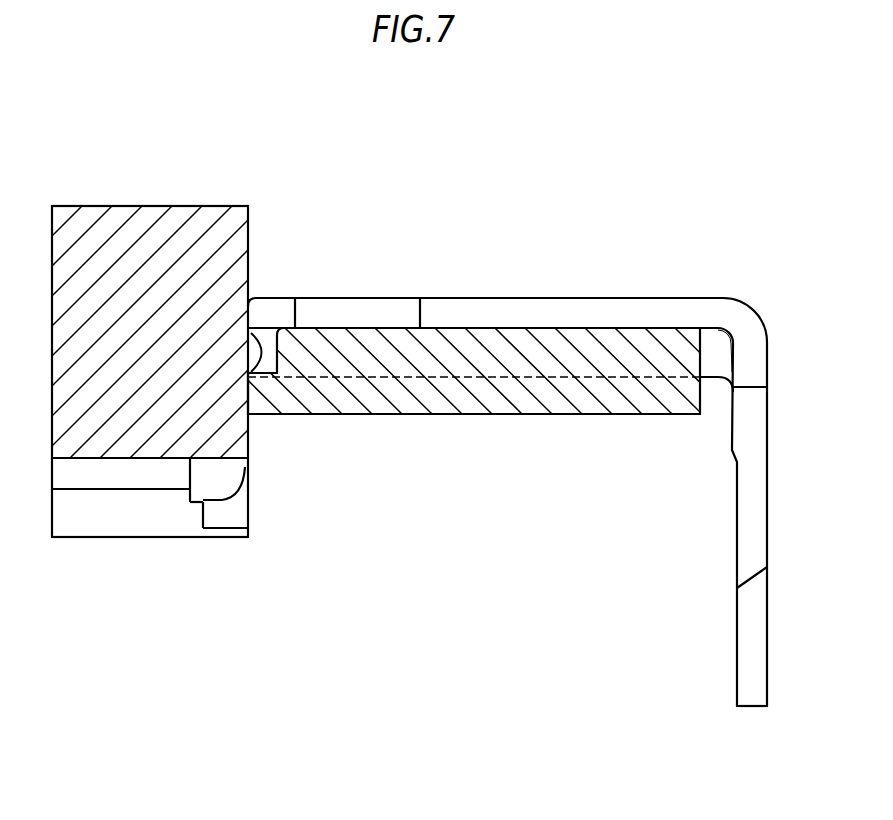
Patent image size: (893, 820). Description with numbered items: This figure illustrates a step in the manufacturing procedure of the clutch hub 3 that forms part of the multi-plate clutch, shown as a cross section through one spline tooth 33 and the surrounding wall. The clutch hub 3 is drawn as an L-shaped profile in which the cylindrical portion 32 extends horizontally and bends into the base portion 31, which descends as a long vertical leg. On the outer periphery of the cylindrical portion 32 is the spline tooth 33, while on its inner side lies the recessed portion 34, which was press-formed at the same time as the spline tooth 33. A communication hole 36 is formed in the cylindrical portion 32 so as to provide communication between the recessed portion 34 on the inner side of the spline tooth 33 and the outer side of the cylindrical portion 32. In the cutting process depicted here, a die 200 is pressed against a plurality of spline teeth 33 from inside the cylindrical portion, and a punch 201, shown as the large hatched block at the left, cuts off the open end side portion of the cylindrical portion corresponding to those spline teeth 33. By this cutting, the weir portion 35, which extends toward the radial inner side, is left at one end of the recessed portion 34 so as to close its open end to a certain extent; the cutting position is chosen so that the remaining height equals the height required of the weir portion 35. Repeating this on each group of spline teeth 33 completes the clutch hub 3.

The punch 201 is at (80, 206).
The clutch hub 3 is at (769, 303).
The communication hole 36 is at (300, 305).
The spline tooth 33 is at (453, 298).
The cylindrical portion 32 is at (560, 313).
The die 200 is at (583, 402).
The weir portion 35 is at (276, 330).
The recessed portion 34 is at (718, 340).
The base portion 31 is at (760, 706).